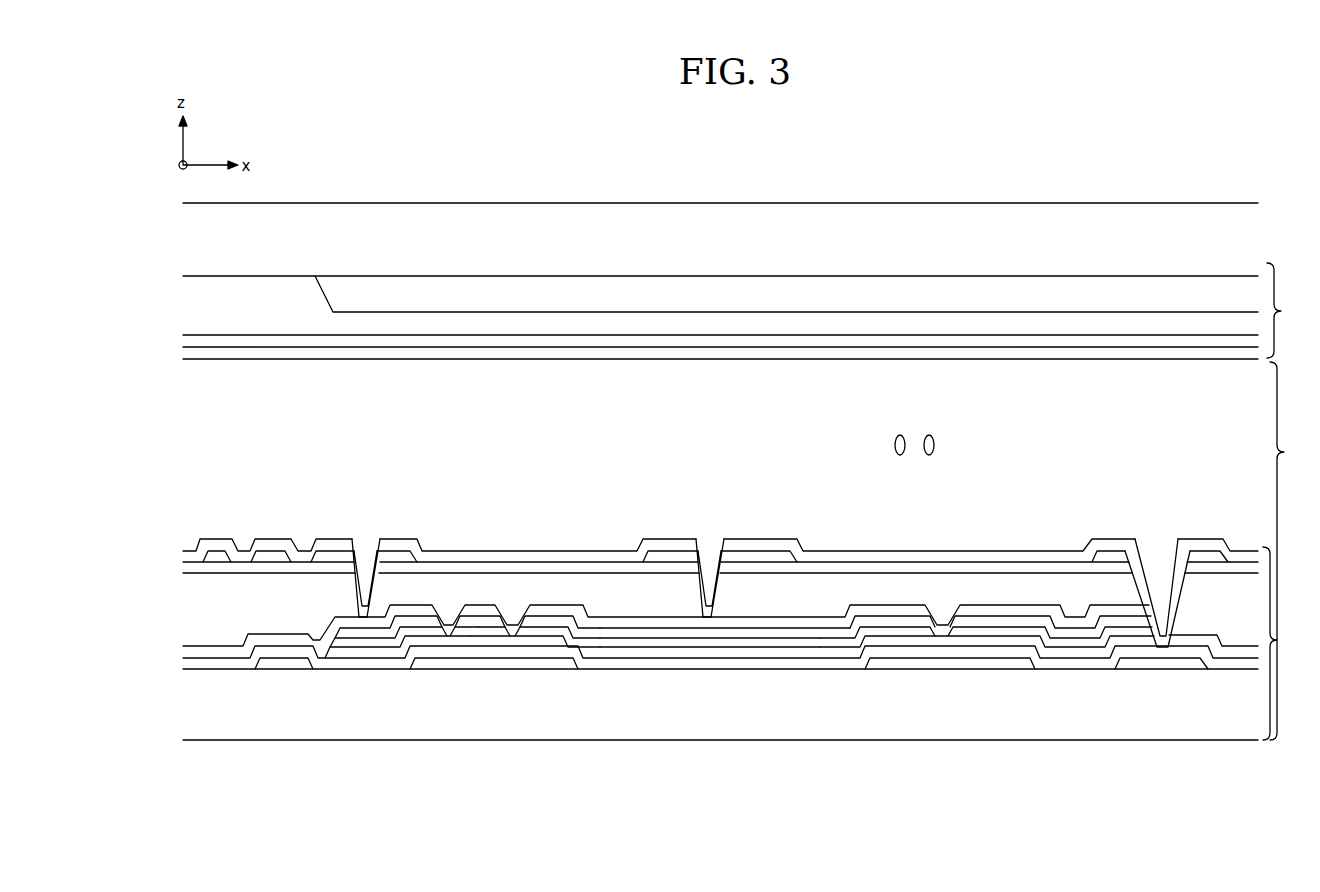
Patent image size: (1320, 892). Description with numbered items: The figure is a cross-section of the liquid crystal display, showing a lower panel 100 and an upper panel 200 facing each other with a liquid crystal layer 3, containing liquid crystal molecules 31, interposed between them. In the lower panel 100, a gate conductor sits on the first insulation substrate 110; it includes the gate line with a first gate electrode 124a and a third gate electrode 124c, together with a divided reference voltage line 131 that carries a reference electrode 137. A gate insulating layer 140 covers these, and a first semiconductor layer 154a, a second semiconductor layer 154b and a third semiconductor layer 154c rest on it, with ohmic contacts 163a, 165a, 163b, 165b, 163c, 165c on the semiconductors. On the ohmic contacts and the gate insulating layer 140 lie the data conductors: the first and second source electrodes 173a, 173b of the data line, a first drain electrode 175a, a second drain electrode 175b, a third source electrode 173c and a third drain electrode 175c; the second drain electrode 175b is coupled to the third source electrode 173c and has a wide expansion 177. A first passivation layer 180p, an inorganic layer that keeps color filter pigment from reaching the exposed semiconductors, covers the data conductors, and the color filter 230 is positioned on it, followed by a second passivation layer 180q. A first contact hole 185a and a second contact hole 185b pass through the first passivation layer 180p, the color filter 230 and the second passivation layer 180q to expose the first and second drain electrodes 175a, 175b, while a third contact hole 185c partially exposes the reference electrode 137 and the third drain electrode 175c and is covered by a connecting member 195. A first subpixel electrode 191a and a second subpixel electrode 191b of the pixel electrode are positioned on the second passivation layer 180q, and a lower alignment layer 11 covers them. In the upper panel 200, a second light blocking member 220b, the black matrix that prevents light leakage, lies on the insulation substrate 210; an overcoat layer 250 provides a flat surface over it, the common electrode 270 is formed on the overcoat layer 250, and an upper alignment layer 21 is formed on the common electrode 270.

The liquid crystal layer 3 is at (1284, 551).
The lower alignment layer 11 is at (598, 548).
The upper alignment layer 21 is at (1077, 352).
The liquid crystal molecules 31 is at (935, 445).
The lower panel 100 is at (1286, 643).
The first insulation substrate 110 is at (820, 718).
The first gate electrode 124a is at (445, 668).
The third gate electrode 124c is at (928, 668).
The divided reference voltage line 131 is at (287, 665).
The reference electrode 137 is at (1155, 668).
The gate insulating layer 140 is at (700, 665).
The first semiconductor layer 154a is at (433, 645).
The second semiconductor layer 154b is at (527, 640).
The third semiconductor layer 154c is at (975, 645).
The ohmic contact 163a is at (470, 640).
The ohmic contact 163b is at (497, 640).
The ohmic contact 163c is at (895, 625).
The ohmic contact 165a is at (345, 635).
The ohmic contact 165b is at (560, 635).
The ohmic contact 165c is at (1005, 625).
The first source electrode 173a is at (463, 600).
The second source electrode 173b is at (490, 598).
The third source electrode 173c is at (870, 625).
The first drain electrode 175a is at (370, 635).
The second drain electrode 175b is at (531, 600).
The third drain electrode 175c is at (985, 625).
The wide expansion 177 is at (765, 632).
The first passivation layer 180p is at (232, 650).
The second passivation layer 180q is at (1238, 565).
The first contact hole 185a is at (345, 590).
The second contact hole 185b is at (690, 590).
The third contact hole 185c is at (1128, 590).
The first subpixel electrode 191a is at (217, 548).
The second subpixel electrode 191b is at (668, 548).
The connecting member 195 is at (1190, 548).
The upper panel 200 is at (1291, 310).
The insulation substrate 210 is at (528, 220).
The second light blocking member 220b is at (645, 290).
The color filter 230 is at (196, 625).
The overcoat layer 250 is at (786, 325).
The common electrode 270 is at (918, 342).